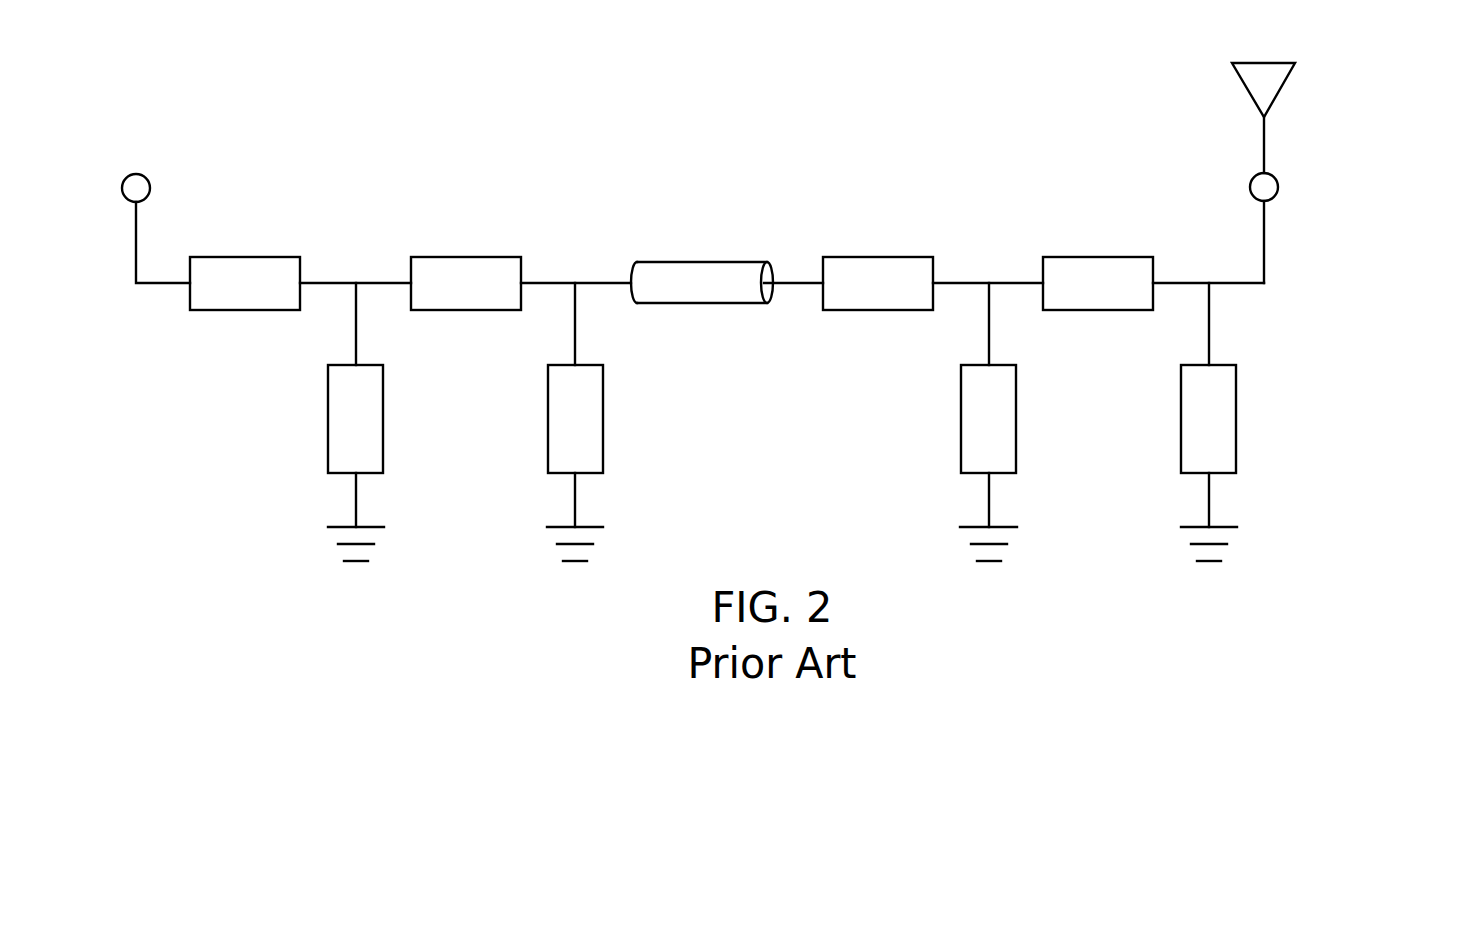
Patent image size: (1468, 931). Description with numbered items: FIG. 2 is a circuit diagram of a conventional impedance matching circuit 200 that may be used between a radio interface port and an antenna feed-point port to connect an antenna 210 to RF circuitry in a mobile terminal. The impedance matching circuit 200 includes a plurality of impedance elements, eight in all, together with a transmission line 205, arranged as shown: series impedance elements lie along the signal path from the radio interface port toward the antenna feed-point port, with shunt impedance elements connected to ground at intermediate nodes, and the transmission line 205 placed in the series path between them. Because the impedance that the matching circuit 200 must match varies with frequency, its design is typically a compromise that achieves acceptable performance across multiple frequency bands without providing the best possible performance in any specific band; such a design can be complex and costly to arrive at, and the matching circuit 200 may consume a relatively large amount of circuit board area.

The impedance matching circuit 200 is at (514, 112).
The transmission line 205 is at (698, 262).
The antenna 210 is at (1293, 65).